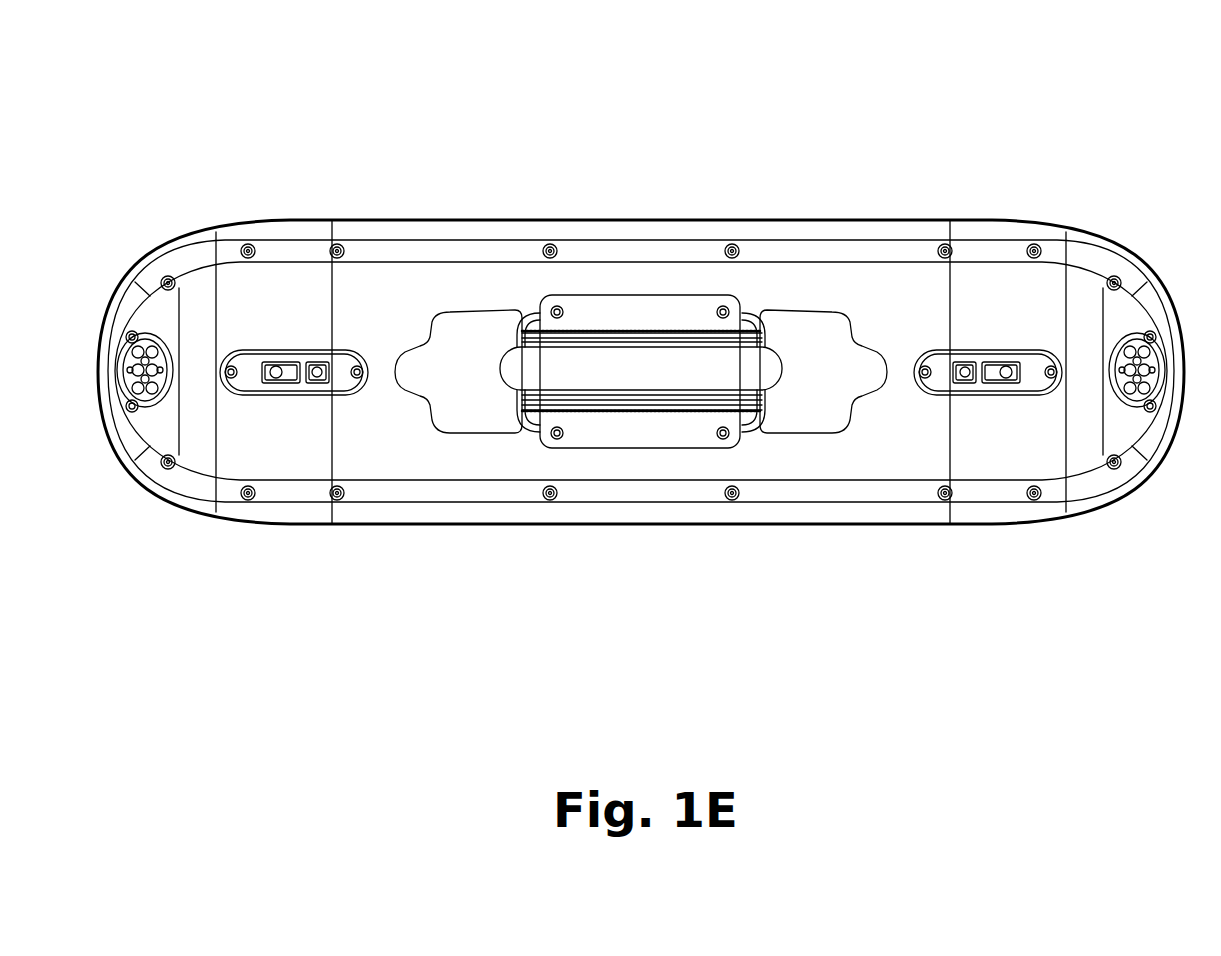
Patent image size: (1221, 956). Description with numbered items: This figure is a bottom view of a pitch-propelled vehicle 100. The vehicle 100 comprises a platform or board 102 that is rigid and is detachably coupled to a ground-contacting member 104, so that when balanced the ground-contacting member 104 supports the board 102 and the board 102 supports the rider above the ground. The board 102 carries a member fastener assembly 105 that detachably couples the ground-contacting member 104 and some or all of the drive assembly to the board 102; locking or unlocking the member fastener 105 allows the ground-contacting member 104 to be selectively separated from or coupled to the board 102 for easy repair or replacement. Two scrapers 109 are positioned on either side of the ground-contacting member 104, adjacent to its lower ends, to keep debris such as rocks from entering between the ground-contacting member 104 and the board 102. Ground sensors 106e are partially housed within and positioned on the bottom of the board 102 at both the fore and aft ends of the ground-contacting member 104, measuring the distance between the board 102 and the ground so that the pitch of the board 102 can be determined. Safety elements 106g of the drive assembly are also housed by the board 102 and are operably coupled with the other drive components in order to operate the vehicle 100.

The pitch-propelled vehicle 100 is at (1104, 116).
The board 102 is at (895, 510).
The ground-contacting member 104 is at (668, 382).
The member fastener assembly 105 is at (617, 427).
The ground sensors 106e is at (287, 378).
The safety elements 106g is at (140, 390).
The scrapers 109 is at (482, 418).